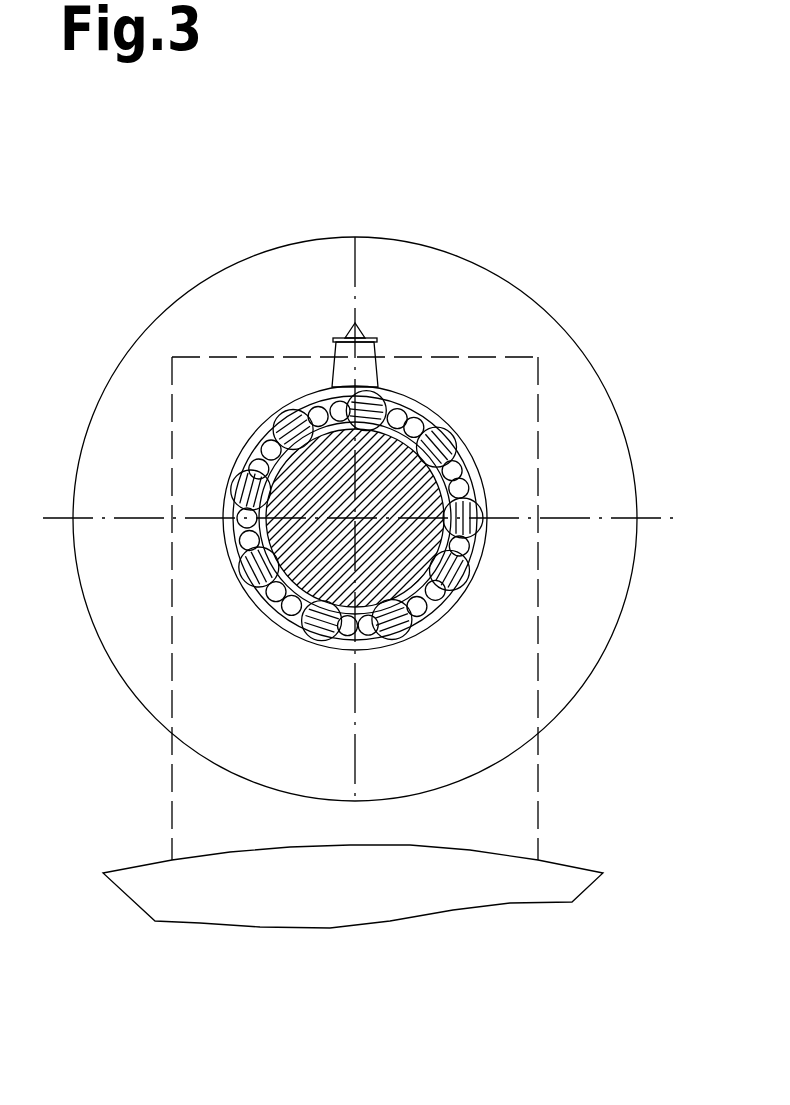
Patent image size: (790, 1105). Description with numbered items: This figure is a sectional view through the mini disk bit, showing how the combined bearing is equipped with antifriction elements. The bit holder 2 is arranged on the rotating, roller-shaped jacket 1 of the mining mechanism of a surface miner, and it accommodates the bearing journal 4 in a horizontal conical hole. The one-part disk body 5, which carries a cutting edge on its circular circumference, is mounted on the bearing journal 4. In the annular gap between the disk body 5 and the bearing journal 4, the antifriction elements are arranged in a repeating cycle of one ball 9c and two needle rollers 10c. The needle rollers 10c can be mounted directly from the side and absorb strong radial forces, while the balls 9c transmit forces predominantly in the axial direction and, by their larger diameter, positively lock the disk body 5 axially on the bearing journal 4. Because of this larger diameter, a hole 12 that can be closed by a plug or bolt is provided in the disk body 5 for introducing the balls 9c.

The jacket 1 is at (423, 880).
The bit holder 2 is at (473, 810).
The bearing journal 4 is at (405, 503).
The disk body 5 is at (570, 644).
The ball 9c is at (440, 446).
The needle roller 10c is at (463, 548).
The hole 12 is at (360, 368).